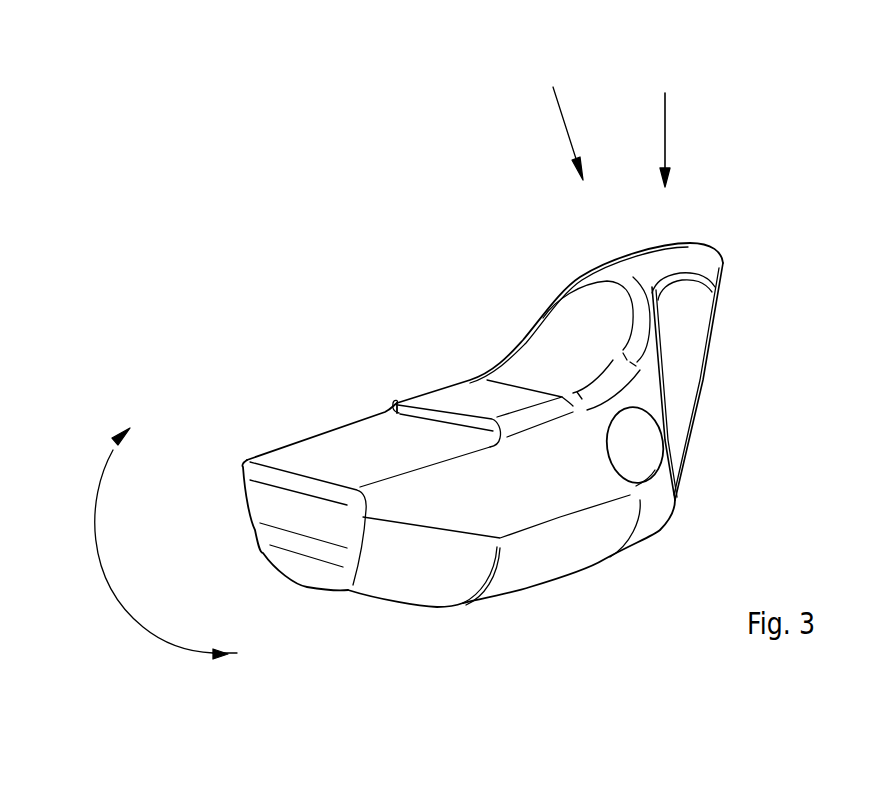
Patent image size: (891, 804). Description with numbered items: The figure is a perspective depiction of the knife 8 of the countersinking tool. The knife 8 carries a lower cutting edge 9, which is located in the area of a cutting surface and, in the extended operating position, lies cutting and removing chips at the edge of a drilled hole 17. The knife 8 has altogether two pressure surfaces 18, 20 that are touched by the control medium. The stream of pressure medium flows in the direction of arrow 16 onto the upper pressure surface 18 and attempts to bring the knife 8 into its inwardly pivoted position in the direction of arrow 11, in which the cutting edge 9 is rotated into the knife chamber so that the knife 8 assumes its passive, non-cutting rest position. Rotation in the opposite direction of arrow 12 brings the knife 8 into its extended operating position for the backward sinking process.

The knife 8 is at (568, 124).
The cutting edge 9 is at (327, 433).
The direction of arrow 11 is at (118, 441).
The direction of arrow 12 is at (220, 657).
The direction of arrow 16 is at (665, 117).
The drilled hole 17 is at (635, 442).
The pressure surface 18 is at (695, 258).
The pressure surface 20 is at (568, 345).